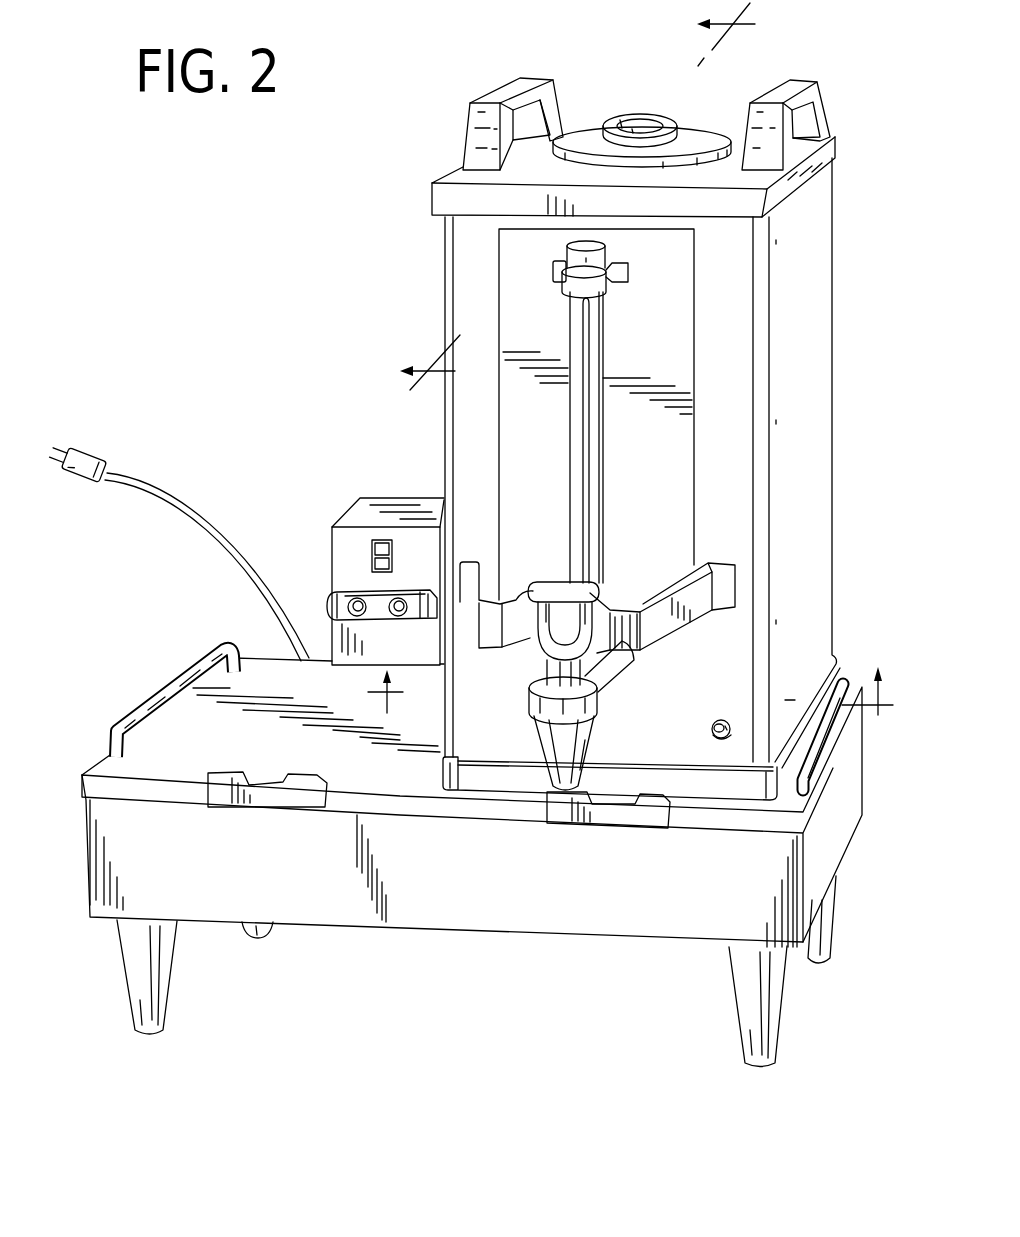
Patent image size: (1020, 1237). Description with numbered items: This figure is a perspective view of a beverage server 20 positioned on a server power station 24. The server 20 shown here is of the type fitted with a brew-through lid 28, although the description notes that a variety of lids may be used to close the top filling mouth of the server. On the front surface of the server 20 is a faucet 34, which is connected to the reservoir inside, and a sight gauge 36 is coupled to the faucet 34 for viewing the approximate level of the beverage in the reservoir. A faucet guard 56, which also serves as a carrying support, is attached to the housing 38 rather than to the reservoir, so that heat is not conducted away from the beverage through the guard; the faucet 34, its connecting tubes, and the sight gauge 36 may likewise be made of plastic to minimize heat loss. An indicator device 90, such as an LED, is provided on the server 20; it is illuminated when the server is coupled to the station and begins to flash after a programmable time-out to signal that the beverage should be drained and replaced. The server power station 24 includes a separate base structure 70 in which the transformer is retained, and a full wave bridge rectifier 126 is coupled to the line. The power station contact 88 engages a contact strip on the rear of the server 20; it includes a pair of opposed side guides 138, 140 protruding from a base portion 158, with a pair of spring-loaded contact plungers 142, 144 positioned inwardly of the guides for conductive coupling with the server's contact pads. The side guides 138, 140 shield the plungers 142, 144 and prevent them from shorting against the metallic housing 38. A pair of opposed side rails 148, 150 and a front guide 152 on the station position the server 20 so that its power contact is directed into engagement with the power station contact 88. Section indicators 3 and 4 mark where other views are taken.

The beverage server 20 is at (843, 372).
The server power station 24 is at (847, 912).
The brew-through lid 28 is at (591, 128).
The faucet 34 is at (573, 746).
The sight gauge 36 is at (580, 447).
The housing 38 is at (800, 498).
The faucet guard 56 is at (643, 647).
The base structure 70 is at (535, 923).
The power station contact 88 is at (350, 574).
The indicator device 90 is at (730, 722).
The full wave bridge rectifier 126 is at (383, 540).
The side guide 138 is at (327, 605).
The side guide 140 is at (432, 608).
The spring-loaded contact plunger 142 is at (364, 614).
The spring-loaded contact plunger 144 is at (400, 614).
The side rail 148 is at (445, 751).
The side rail 150 is at (800, 770).
The front guide 152 is at (620, 825).
The base portion 158 is at (415, 593).
The section line 3 is at (419, 373).
The section line 4 is at (629, 709).